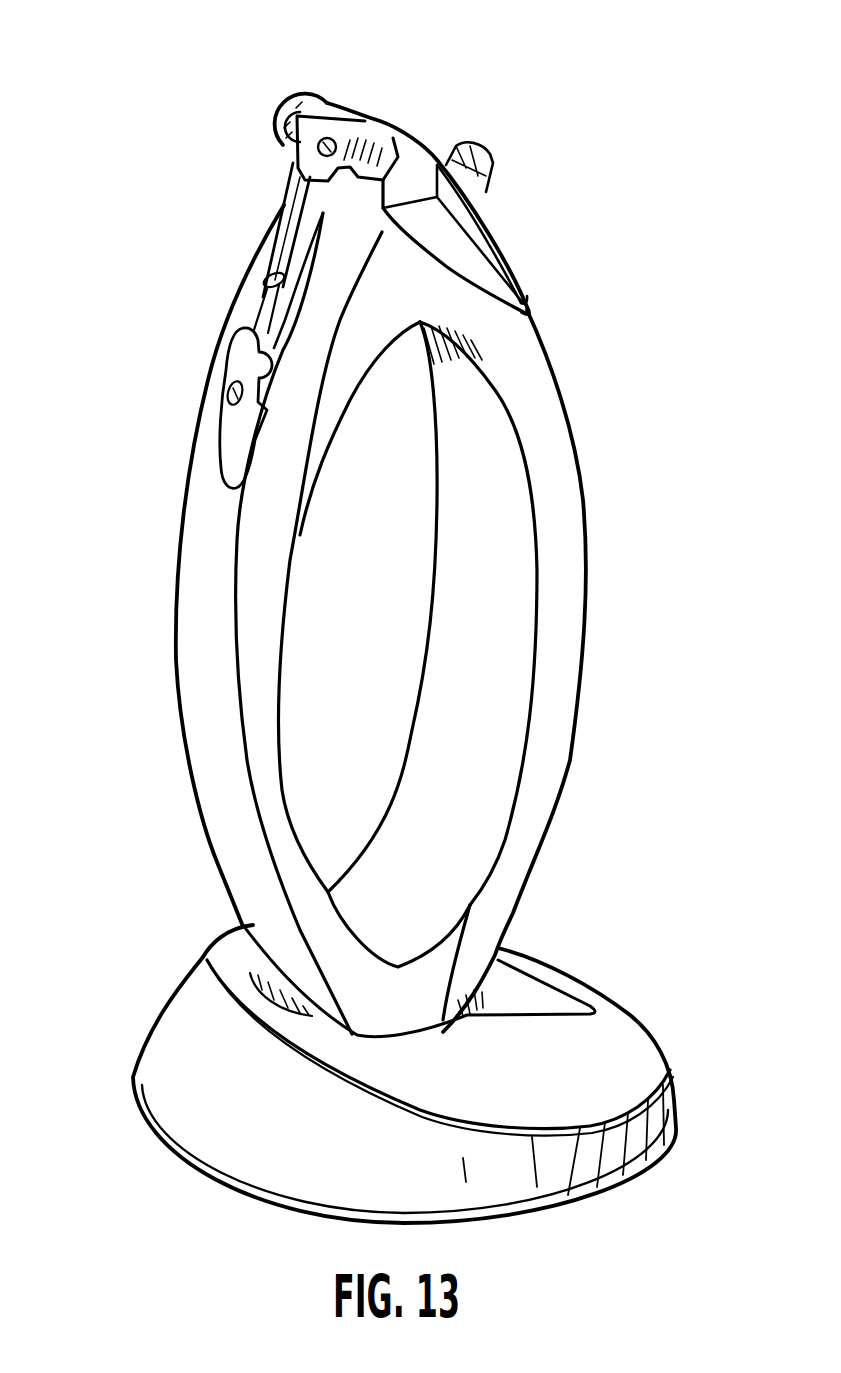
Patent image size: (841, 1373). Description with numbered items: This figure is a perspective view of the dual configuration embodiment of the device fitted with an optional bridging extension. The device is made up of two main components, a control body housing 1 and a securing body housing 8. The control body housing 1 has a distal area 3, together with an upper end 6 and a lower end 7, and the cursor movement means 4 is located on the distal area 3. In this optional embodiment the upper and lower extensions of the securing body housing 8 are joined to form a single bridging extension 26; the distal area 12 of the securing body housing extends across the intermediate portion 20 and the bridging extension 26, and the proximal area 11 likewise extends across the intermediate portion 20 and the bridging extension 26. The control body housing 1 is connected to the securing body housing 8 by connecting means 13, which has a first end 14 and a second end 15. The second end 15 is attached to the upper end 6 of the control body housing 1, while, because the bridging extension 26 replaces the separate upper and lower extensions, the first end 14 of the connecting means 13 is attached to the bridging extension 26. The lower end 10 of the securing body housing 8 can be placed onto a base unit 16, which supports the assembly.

The control body housing 1 is at (503, 237).
The distal area 3 is at (483, 207).
The cursor movement means 4 is at (485, 145).
The upper end 6 is at (400, 137).
The lower end 7 is at (535, 298).
The securing body housing 8 is at (580, 678).
The lower end 10 is at (403, 997).
The proximal area 11 is at (440, 627).
The distal area 12 is at (585, 495).
The connecting means 13 is at (281, 191).
The first end 14 is at (193, 477).
The second end 15 is at (357, 112).
The base unit 16 is at (660, 1020).
The intermediate portion 20 is at (432, 530).
The bridging extension 26 is at (186, 655).